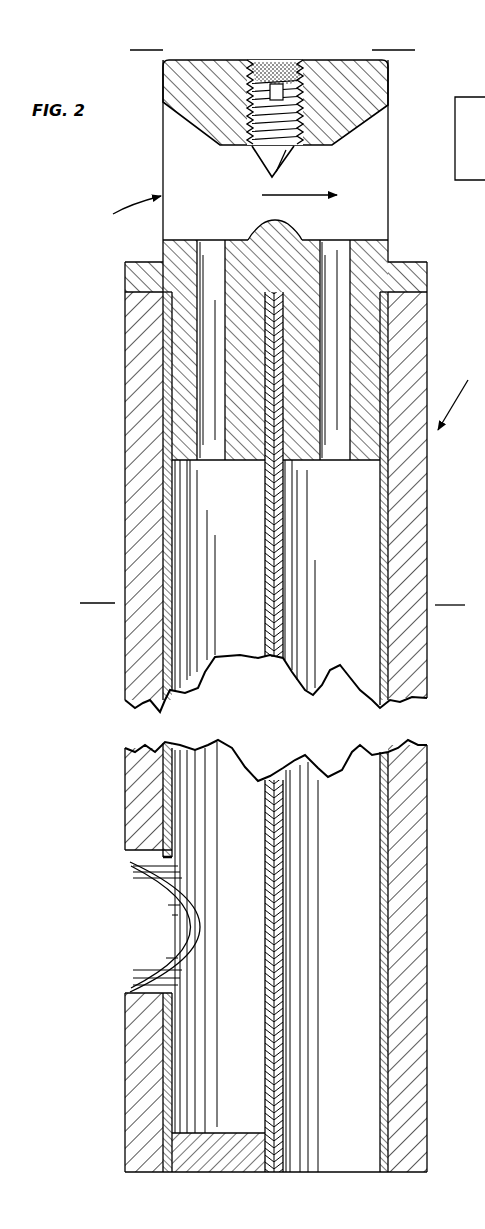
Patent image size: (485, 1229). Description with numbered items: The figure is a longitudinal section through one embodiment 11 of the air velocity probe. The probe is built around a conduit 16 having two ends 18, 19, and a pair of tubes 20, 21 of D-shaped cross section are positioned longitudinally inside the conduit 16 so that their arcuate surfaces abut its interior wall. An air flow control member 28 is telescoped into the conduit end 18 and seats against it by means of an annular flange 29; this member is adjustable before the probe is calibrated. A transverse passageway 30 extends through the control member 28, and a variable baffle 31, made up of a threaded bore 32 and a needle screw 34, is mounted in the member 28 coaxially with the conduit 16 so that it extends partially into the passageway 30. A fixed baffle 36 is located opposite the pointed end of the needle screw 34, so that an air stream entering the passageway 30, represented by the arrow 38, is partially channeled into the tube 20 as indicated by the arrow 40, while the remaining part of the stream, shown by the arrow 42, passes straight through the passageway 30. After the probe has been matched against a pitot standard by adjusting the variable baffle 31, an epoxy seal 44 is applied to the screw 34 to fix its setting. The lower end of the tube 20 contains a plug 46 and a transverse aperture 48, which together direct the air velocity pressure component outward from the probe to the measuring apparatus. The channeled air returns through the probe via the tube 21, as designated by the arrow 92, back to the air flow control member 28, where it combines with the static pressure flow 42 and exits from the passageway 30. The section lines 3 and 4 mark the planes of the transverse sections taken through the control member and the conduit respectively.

The section line 3- 3 is at (147, 50).
The section line 4- 4 is at (100, 600).
The probe embodiment 11 is at (461, 394).
The conduit 16 is at (427, 322).
The conduit end 18 is at (401, 290).
The conduit end 19 is at (400, 1172).
The tube 20 is at (195, 1047).
The tube 21 is at (342, 1025).
The air flow control member 28 is at (199, 60).
The annular flange 29 is at (427, 280).
The transverse passageway 30 is at (183, 158).
The variable baffle 31 is at (250, 152).
The threaded bore 32 is at (296, 65).
The needle screw 34 is at (278, 118).
The fixed baffle 36 is at (288, 222).
The air stream arrow 38 is at (124, 214).
The channeled air stream arrow 40 is at (211, 482).
The remaining air stream arrow 42 is at (301, 183).
The epoxy seal 44 is at (267, 61).
The plug 46 is at (226, 1172).
The transverse aperture 48 is at (163, 948).
The return air stream arrow 92 is at (336, 240).